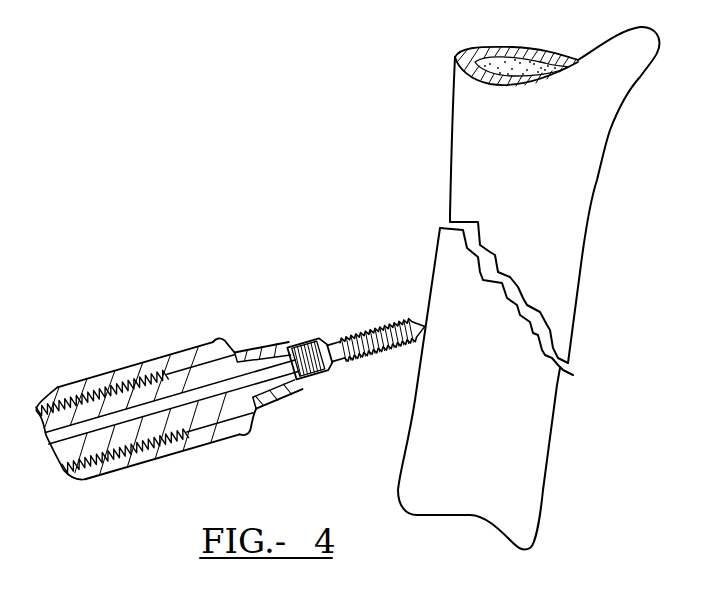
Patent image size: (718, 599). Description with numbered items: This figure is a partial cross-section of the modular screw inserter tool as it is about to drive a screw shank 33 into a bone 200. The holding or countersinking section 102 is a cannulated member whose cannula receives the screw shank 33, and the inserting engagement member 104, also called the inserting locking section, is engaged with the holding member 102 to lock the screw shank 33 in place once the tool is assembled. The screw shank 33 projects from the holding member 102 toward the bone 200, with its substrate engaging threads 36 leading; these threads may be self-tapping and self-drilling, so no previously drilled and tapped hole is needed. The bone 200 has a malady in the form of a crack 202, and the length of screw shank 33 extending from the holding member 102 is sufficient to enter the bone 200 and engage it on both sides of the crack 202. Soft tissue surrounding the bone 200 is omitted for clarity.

The modular shank 33 is at (336, 330).
The substrate engaging threads 36 is at (393, 318).
The holding or countersinking section 102 is at (194, 339).
The inserting engagement member 104 is at (110, 397).
The bone 200 is at (570, 188).
The crack 202 is at (573, 375).